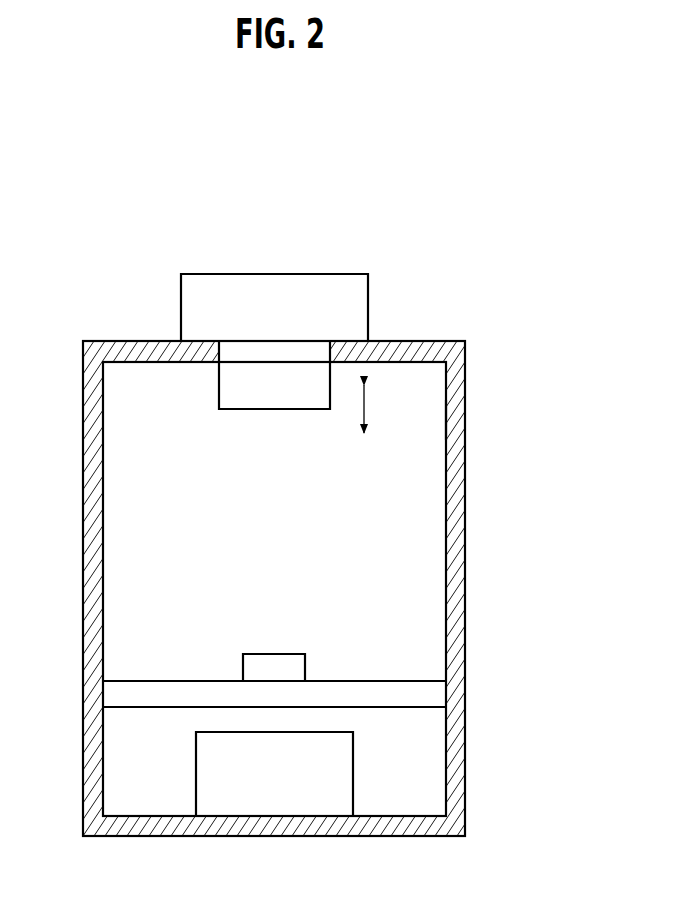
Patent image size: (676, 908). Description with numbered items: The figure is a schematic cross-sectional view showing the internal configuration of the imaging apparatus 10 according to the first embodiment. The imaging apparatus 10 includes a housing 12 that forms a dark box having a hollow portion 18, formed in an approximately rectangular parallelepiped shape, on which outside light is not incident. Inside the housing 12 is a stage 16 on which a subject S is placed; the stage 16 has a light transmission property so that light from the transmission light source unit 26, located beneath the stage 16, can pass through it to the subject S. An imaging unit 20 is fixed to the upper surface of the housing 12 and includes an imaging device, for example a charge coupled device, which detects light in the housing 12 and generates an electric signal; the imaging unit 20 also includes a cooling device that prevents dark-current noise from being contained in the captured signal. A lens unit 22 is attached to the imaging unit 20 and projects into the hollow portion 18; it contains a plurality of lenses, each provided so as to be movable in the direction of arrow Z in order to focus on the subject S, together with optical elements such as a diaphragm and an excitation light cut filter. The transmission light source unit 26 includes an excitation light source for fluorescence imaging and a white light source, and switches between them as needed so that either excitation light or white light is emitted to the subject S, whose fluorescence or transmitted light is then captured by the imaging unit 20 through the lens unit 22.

The imaging apparatus 10 is at (452, 232).
The housing 12 is at (457, 463).
The stage 16 is at (437, 696).
The hollow portion 18 is at (437, 423).
The imaging unit 20 is at (337, 275).
The lens unit 22 is at (292, 404).
The transmission light source unit 26 is at (291, 808).
The subject S is at (293, 661).
The direction of arrow Z is at (365, 409).